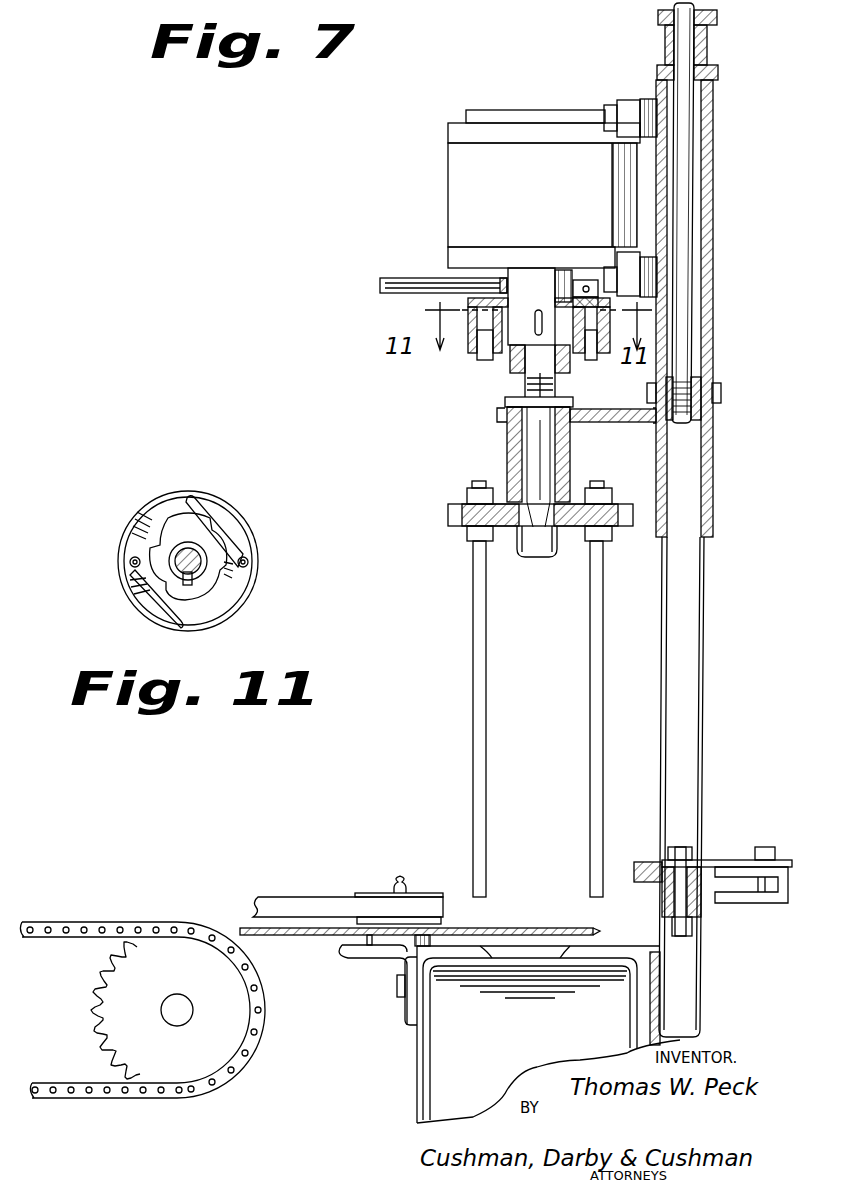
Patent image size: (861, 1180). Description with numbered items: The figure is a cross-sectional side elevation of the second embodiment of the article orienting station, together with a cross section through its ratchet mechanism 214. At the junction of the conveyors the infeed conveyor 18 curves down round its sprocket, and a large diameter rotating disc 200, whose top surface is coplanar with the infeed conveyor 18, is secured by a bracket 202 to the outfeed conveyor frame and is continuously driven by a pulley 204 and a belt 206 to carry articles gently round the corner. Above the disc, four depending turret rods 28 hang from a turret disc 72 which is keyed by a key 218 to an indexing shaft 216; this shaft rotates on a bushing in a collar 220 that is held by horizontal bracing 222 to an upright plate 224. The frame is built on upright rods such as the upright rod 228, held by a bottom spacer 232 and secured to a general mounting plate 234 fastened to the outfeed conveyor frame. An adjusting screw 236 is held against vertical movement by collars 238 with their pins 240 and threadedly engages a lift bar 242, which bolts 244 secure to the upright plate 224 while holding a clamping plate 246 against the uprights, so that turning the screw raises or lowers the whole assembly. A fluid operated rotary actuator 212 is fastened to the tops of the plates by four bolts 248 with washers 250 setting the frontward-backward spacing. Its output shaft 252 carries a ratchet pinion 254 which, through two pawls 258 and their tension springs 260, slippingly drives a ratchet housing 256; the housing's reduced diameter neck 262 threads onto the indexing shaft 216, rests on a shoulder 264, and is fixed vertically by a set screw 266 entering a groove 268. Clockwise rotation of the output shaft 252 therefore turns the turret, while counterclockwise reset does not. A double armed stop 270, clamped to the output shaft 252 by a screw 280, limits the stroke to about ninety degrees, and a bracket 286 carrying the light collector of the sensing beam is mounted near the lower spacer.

In FIG. 7, the infeed conveyor 18 is at (92, 912).
In FIG. 7, the depending turret rods 28 is at (589, 701).
In FIG. 7, the turret disc 72 is at (450, 533).
In FIG. 7, the disc 200 is at (298, 936).
In FIG. 7, the bracket 202 is at (377, 958).
In FIG. 7, the pulley 204 is at (370, 893).
In FIG. 7, the belt 206 is at (298, 897).
In FIG. 7, the rotary actuator 212 is at (440, 190).
In FIG. 7, the ratchet mechanism 214 is at (495, 331).
In FIG. 7, the indexing shaft 216 is at (505, 453).
In FIG. 7, the key 218 is at (540, 558).
In FIG. 7, the collar 220 is at (507, 467).
In FIG. 7, the horizontal bracing 222 is at (621, 445).
In FIG. 7, the upright plate 224 is at (600, 434).
In FIG. 7, the upright rod 228 is at (700, 623).
In FIG. 7, the bottom spacer 232 is at (698, 910).
In FIG. 7, the general mounting plate 234 is at (660, 950).
In FIG. 7, the adjusting screw 236 is at (683, 46).
In FIG. 7, the collars 238 is at (717, 17).
In FIG. 7, the pins 240 is at (664, 20).
In FIG. 7, the lift bar 242 is at (692, 368).
In FIG. 7, the bolts 244 is at (720, 398).
In FIG. 7, the clamping plate 246 is at (714, 244).
In FIG. 7, the bolts 248 is at (606, 107).
In FIG. 7, the washers 250 is at (652, 98).
In FIG. 7, the output shaft 252 is at (530, 290).
In FIG. 11, the output shaft 252 is at (177, 547).
In FIG. 7, the ratchet pinion 254 is at (588, 345).
In FIG. 11, the ratchet pinion 254 is at (245, 597).
In FIG. 7, the ratchet housing 256 is at (470, 340).
In FIG. 11, the ratchet housing 256 is at (254, 538).
In FIG. 11, the pawls 258 is at (143, 552).
In FIG. 7, the tension springs 260 is at (502, 382).
In FIG. 11, the tension springs 260 is at (207, 512).
In FIG. 7, the reduced diameter neck 262 is at (520, 366).
In FIG. 7, the shoulder 264 is at (533, 455).
In FIG. 7, the set screw 266 is at (592, 365).
In FIG. 7, the groove 268 is at (505, 408).
In FIG. 7, the double armed stop 270 is at (395, 311).
In FIG. 7, the screw 280 is at (610, 268).
In FIG. 7, the bracket 286 is at (775, 900).